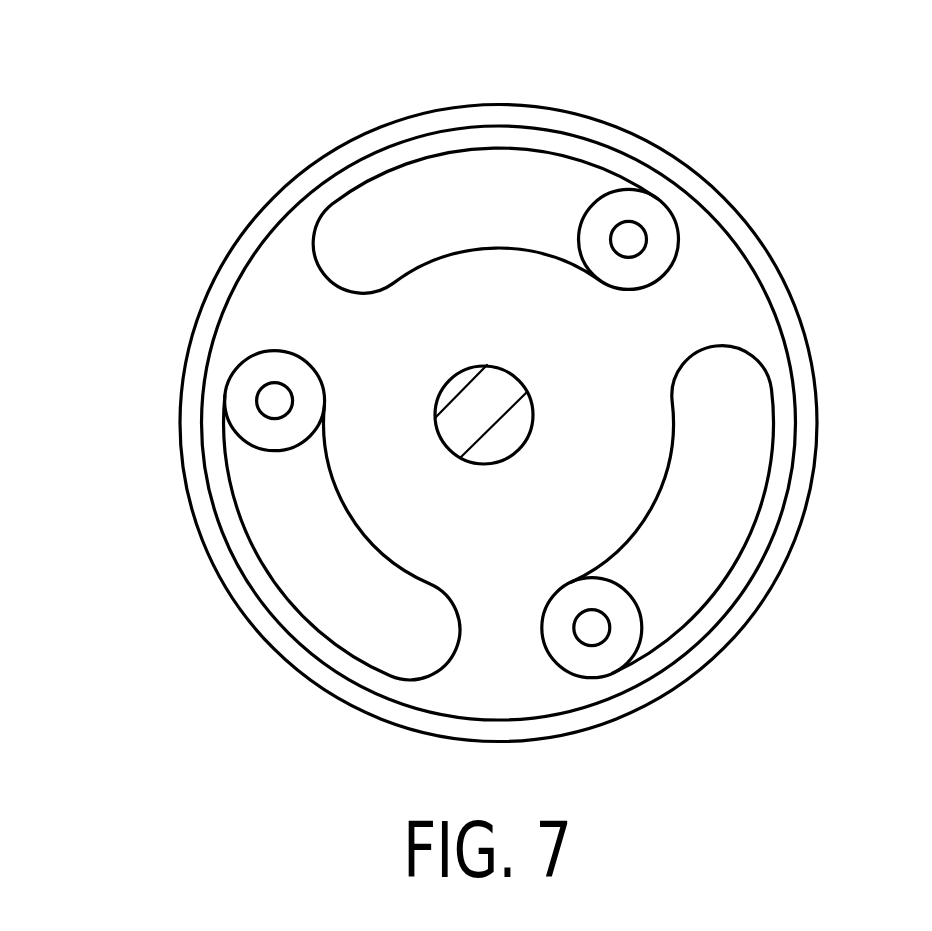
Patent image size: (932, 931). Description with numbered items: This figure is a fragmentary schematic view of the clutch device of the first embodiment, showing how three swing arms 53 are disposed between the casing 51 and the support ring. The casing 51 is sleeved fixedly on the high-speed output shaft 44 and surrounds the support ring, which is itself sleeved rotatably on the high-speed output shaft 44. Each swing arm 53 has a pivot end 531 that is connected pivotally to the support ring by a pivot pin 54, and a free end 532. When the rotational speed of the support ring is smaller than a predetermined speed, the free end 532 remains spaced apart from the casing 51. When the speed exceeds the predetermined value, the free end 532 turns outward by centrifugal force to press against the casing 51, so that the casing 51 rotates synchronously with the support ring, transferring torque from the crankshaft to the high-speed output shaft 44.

The high-speed output shaft 44 is at (482, 410).
The casing 51 is at (680, 662).
The swing arm 53 is at (500, 167).
The pivot end 531 is at (660, 236).
The free end 532 is at (333, 200).
The pivot pin 54 is at (629, 238).